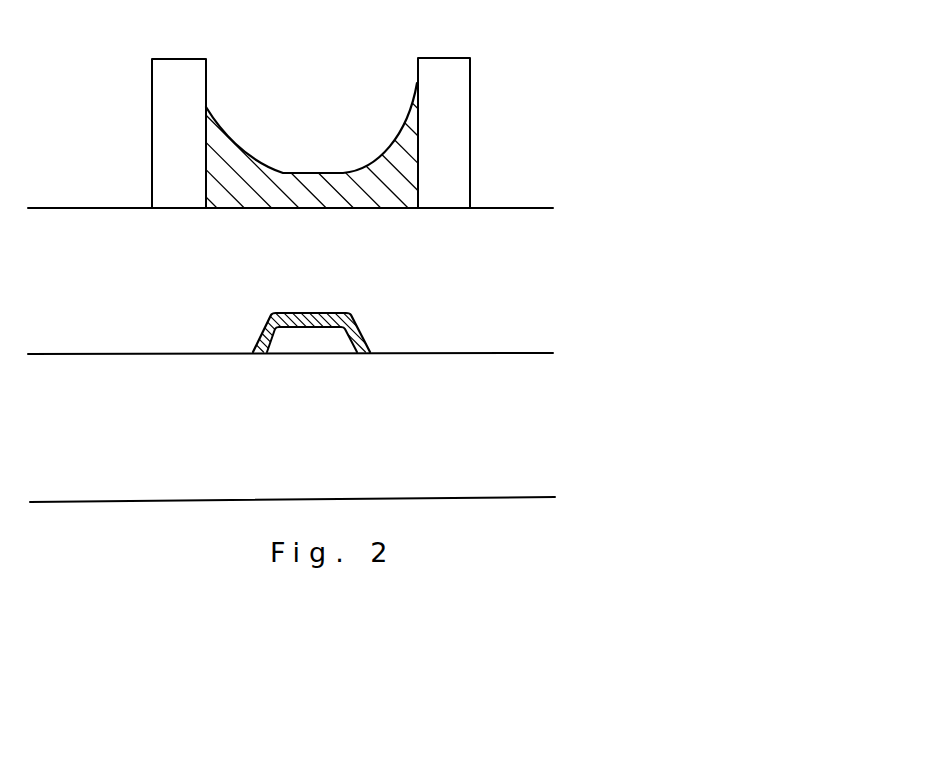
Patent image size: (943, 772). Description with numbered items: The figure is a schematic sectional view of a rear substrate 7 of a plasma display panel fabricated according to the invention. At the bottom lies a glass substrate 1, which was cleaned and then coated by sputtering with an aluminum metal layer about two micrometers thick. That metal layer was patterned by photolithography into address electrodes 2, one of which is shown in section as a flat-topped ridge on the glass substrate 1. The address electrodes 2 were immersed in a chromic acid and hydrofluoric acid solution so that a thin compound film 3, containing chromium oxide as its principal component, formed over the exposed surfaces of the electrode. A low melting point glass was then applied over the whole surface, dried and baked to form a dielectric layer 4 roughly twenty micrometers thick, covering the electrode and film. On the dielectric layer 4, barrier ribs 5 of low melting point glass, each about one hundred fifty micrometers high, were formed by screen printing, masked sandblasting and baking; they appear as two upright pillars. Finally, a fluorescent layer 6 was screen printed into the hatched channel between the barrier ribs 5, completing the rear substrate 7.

The glass substrate 1 is at (537, 423).
The address electrodes 2 is at (330, 342).
The compound film 3 is at (360, 322).
The dielectric layer 4 is at (537, 225).
The barrier ribs 5 is at (458, 105).
The fluorescent layers 6 is at (228, 172).
The rear substrate 7 is at (512, 42).